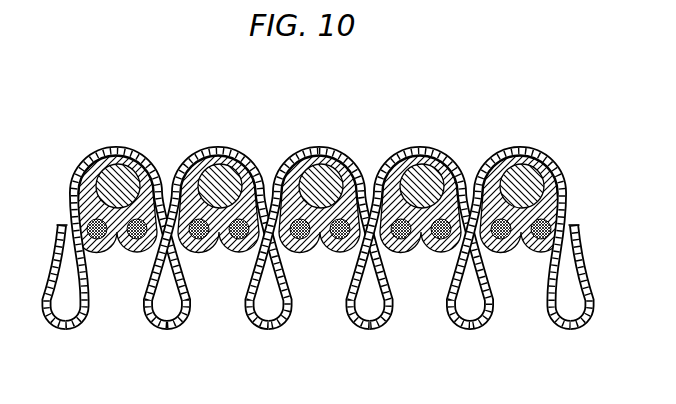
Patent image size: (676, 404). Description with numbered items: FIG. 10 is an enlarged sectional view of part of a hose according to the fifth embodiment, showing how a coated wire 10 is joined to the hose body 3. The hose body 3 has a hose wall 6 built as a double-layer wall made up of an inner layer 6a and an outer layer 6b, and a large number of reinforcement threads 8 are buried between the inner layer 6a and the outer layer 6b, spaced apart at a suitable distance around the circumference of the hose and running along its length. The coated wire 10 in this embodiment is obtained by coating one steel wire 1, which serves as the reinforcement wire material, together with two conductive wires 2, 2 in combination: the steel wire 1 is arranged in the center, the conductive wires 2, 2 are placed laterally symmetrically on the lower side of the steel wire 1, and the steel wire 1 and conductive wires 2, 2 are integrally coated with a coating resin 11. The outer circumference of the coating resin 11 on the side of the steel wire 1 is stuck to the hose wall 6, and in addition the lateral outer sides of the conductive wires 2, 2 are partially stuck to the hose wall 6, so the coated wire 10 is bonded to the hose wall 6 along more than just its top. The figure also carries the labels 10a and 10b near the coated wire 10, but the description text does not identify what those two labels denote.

The steel wire 1 is at (520, 188).
The conductive wires 2 is at (431, 255).
The hose body 3 is at (108, 133).
The hose wall 6 is at (425, 150).
The inner layer 6a is at (293, 162).
The outer layer 6b is at (353, 153).
The reinforcement threads 8 is at (318, 150).
The coated wire 10 is at (520, 301).
The first direction 10a is at (117, 294).
The second direction 10b is at (218, 300).
The coating resin 11 is at (345, 255).